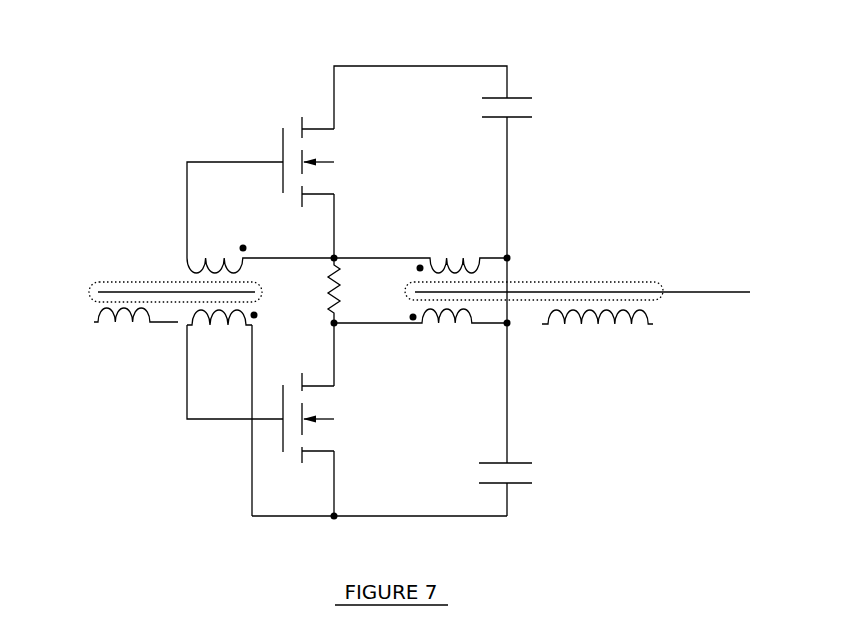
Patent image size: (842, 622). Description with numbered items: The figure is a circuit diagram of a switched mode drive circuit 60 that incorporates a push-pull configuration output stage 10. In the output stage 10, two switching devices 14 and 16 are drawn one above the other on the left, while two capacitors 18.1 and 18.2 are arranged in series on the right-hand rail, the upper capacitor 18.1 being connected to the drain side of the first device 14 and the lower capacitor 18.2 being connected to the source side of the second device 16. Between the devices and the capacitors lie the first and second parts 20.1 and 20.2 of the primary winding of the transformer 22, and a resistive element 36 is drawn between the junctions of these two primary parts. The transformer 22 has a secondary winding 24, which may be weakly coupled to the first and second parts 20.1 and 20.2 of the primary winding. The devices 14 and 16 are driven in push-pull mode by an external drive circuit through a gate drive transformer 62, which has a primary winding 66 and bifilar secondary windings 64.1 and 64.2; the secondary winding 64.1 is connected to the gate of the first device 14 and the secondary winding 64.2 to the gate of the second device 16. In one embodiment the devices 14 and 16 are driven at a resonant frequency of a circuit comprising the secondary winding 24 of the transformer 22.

The output stage 10 is at (356, 104).
The device 14 is at (264, 117).
The device 16 is at (268, 459).
The capacitor 18.1 is at (466, 65).
The capacitor 18.2 is at (481, 517).
The first part of the primary winding 20.1 is at (452, 257).
The second part of the primary winding 20.2 is at (452, 325).
The transformer 22 is at (563, 253).
The secondary winding 24 is at (596, 326).
The resistor 36 is at (340, 290).
The drive circuit 60 is at (645, 86).
The gate drive transformer 62 is at (114, 353).
The bifilar secondary winding 64.1 is at (208, 261).
The bifilar secondary winding 64.2 is at (210, 313).
The primary winding 66 is at (115, 326).